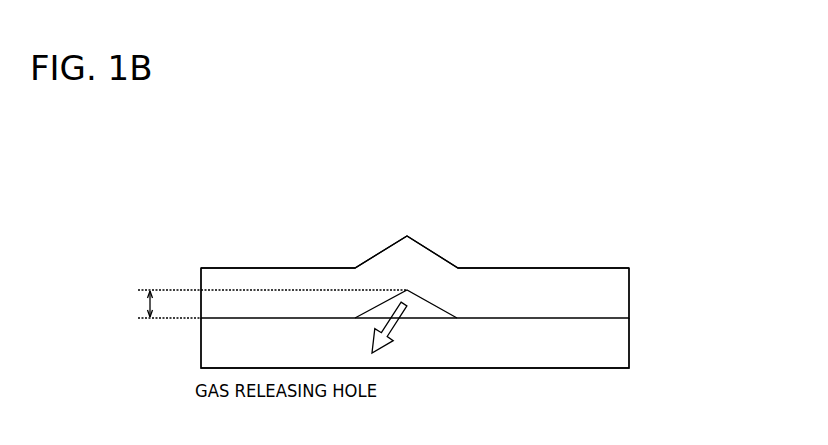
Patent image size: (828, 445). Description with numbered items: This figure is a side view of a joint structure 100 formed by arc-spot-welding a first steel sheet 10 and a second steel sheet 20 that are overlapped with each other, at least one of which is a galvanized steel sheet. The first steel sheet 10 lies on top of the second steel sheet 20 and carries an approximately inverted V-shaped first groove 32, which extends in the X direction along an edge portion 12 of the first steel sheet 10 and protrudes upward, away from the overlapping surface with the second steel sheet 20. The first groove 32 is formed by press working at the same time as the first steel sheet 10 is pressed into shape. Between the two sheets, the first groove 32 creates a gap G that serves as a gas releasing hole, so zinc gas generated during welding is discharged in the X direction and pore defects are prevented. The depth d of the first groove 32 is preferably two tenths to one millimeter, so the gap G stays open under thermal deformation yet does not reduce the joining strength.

The joint structure 100 is at (528, 218).
The edge portion 12 is at (629, 275).
The first steel sheet 10 is at (605, 302).
The second steel sheet 20 is at (605, 345).
The first groove 32 is at (418, 299).
The depth d is at (264, 304).
The gap G is at (421, 316).